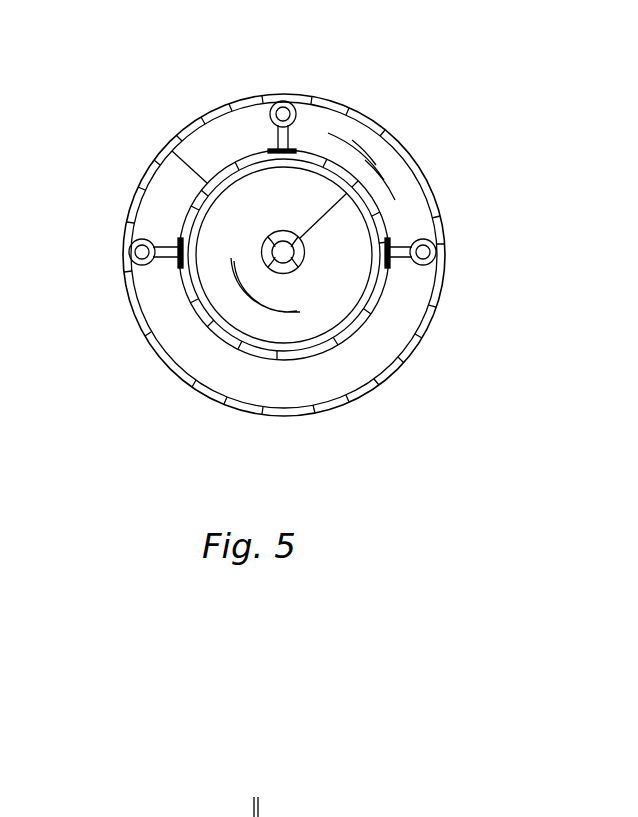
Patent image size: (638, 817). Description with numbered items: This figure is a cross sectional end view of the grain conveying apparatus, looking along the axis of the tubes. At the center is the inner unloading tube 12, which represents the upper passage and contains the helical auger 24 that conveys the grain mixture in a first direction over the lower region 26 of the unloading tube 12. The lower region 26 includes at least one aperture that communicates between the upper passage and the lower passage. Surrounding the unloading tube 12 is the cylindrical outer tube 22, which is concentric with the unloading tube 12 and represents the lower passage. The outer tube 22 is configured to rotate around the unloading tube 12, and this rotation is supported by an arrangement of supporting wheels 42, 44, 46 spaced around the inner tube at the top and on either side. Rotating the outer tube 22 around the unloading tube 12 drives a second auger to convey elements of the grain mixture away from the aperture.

The unloading tube 12 is at (200, 320).
The outer tube 22 is at (435, 316).
The helical auger 24 is at (335, 252).
The lower region 26 is at (308, 318).
The supporting wheel 42 is at (283, 100).
The supporting wheel 44 is at (137, 245).
The supporting wheel 46 is at (437, 250).